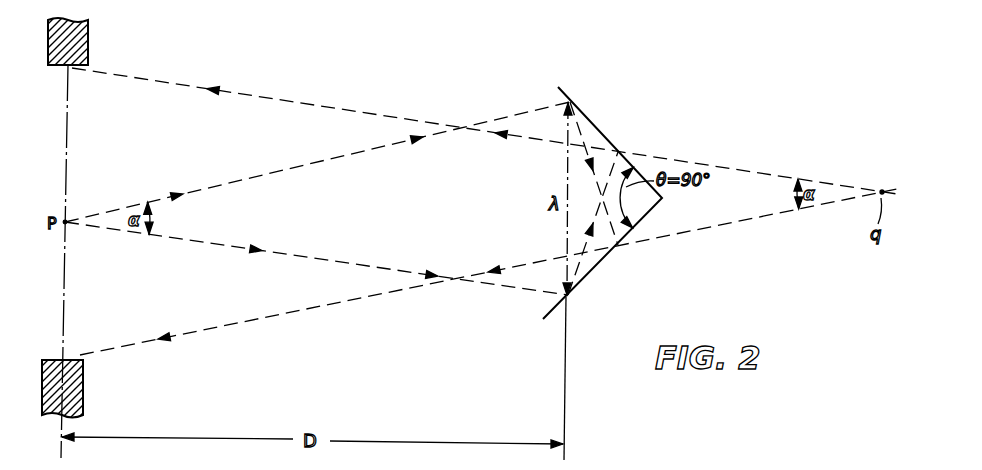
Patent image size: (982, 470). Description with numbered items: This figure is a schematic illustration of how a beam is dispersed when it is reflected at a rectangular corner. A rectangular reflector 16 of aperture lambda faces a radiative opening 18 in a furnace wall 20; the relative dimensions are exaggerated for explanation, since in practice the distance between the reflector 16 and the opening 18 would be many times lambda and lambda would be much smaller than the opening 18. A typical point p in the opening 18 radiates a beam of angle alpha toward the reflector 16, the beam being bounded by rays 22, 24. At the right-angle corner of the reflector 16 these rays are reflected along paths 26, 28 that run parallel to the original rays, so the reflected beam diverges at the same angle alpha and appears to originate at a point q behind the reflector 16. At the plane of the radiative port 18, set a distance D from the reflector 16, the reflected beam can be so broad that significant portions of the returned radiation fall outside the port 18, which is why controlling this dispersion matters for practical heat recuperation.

The rectangular reflector 16 is at (598, 274).
The radiative opening 18 is at (58, 66).
The furnace wall 20 is at (42, 390).
The ray defining the beam 22 is at (240, 254).
The ray defining the beam 24 is at (207, 187).
The reflected path 26 is at (167, 81).
The reflected path 28 is at (108, 344).